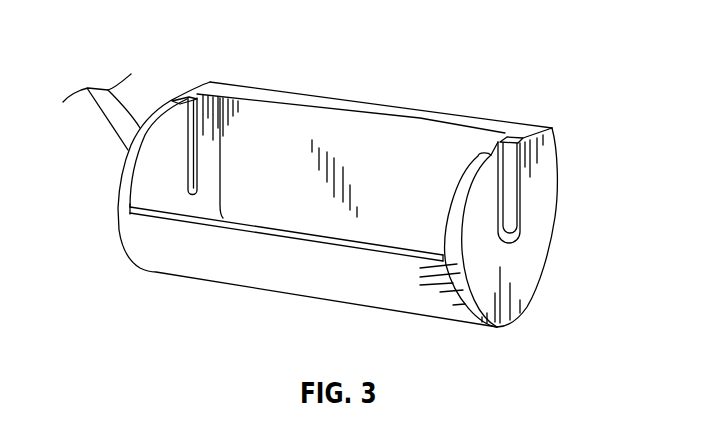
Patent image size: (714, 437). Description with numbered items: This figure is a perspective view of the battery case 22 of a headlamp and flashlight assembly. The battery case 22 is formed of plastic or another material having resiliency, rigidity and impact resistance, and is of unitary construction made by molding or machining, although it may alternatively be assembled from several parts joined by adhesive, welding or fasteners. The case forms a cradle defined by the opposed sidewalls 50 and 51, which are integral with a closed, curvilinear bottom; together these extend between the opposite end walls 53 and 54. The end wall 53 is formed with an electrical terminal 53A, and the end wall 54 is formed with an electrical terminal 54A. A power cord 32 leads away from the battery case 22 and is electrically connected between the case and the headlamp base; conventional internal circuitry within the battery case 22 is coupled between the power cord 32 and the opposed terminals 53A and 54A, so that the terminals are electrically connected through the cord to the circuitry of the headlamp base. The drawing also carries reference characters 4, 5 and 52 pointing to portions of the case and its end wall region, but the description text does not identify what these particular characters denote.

The blood pump / device 4 is at (170, 152).
The end face of disk 5 is at (545, 147).
The battery case 22 is at (557, 222).
The power cord 32 is at (108, 110).
The sidewall 50 is at (323, 117).
The sidewall 51 is at (230, 260).
The end disk 52 is at (530, 305).
The end wall 53 is at (203, 113).
The electrical terminal 53A is at (187, 96).
The end wall 54 is at (543, 237).
The electrical terminal 54A is at (510, 200).